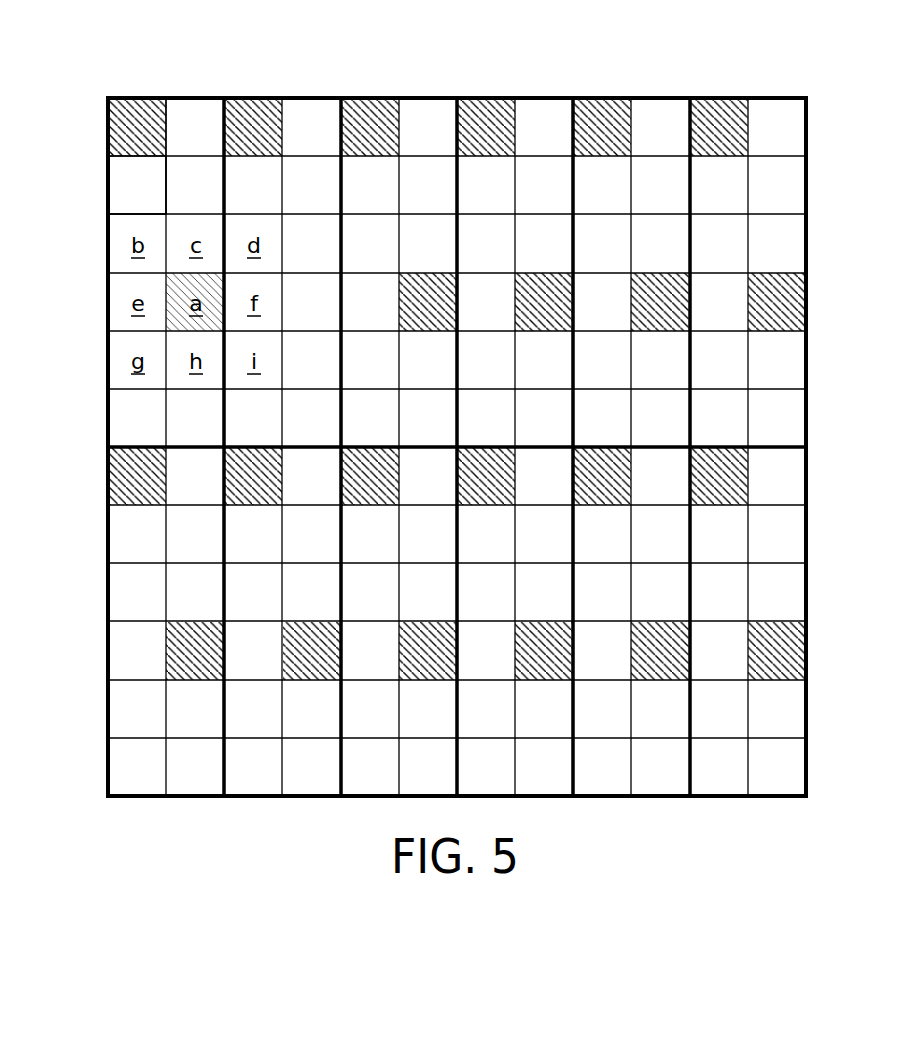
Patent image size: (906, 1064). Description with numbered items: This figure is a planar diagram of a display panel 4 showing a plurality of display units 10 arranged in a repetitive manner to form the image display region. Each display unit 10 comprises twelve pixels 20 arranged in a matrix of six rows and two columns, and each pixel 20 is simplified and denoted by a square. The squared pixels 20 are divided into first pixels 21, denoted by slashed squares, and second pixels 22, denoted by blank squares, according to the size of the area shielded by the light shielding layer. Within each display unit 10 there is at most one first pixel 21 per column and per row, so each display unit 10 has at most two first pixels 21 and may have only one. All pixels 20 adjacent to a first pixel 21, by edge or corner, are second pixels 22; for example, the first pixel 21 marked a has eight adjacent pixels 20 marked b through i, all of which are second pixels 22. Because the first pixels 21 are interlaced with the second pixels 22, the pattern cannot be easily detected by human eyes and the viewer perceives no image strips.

The display panel 4 is at (50, 52).
The display unit 10 is at (194, 98).
The pixel 20 is at (63, 118).
The first pixel 21 is at (112, 133).
The second pixel 22 is at (112, 188).